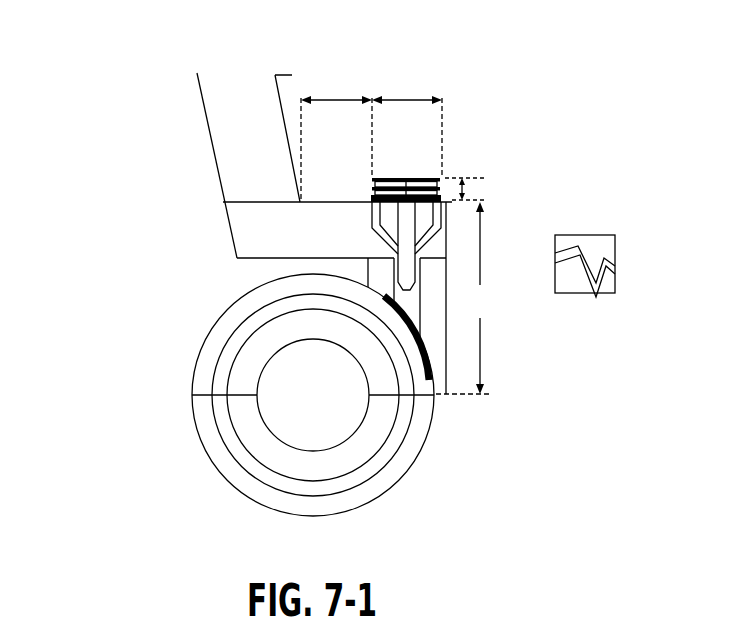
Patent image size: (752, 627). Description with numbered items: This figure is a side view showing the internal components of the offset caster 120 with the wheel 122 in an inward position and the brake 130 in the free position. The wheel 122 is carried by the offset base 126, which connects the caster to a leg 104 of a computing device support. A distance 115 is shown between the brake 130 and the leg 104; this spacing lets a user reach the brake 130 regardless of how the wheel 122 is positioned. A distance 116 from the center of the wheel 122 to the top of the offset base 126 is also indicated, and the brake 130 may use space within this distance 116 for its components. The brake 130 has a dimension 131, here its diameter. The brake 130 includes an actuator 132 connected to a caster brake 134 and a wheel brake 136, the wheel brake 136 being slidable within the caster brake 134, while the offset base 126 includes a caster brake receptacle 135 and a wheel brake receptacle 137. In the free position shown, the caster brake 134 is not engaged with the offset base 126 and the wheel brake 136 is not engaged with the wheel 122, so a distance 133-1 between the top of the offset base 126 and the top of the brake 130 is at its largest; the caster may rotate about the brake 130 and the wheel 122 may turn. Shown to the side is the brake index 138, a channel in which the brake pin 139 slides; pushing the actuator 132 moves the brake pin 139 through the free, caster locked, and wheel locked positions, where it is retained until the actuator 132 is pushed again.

The leg 104 is at (292, 75).
The distance 115 is at (342, 97).
The distance 116 is at (464, 298).
The offset caster 120 is at (101, 50).
The wheel 122 is at (209, 459).
The offset base 126 is at (281, 243).
The brake 130 is at (422, 256).
The dimension 131 is at (398, 96).
The actuator 132 is at (405, 177).
The distance 133-1 is at (463, 189).
The caster brake 134 is at (372, 208).
The caster brake receptacle 135 is at (384, 240).
The wheel brake 136 is at (421, 278).
The wheel brake receptacle 137 is at (421, 308).
The brake index 138 is at (597, 230).
The brake pin 139 is at (561, 252).